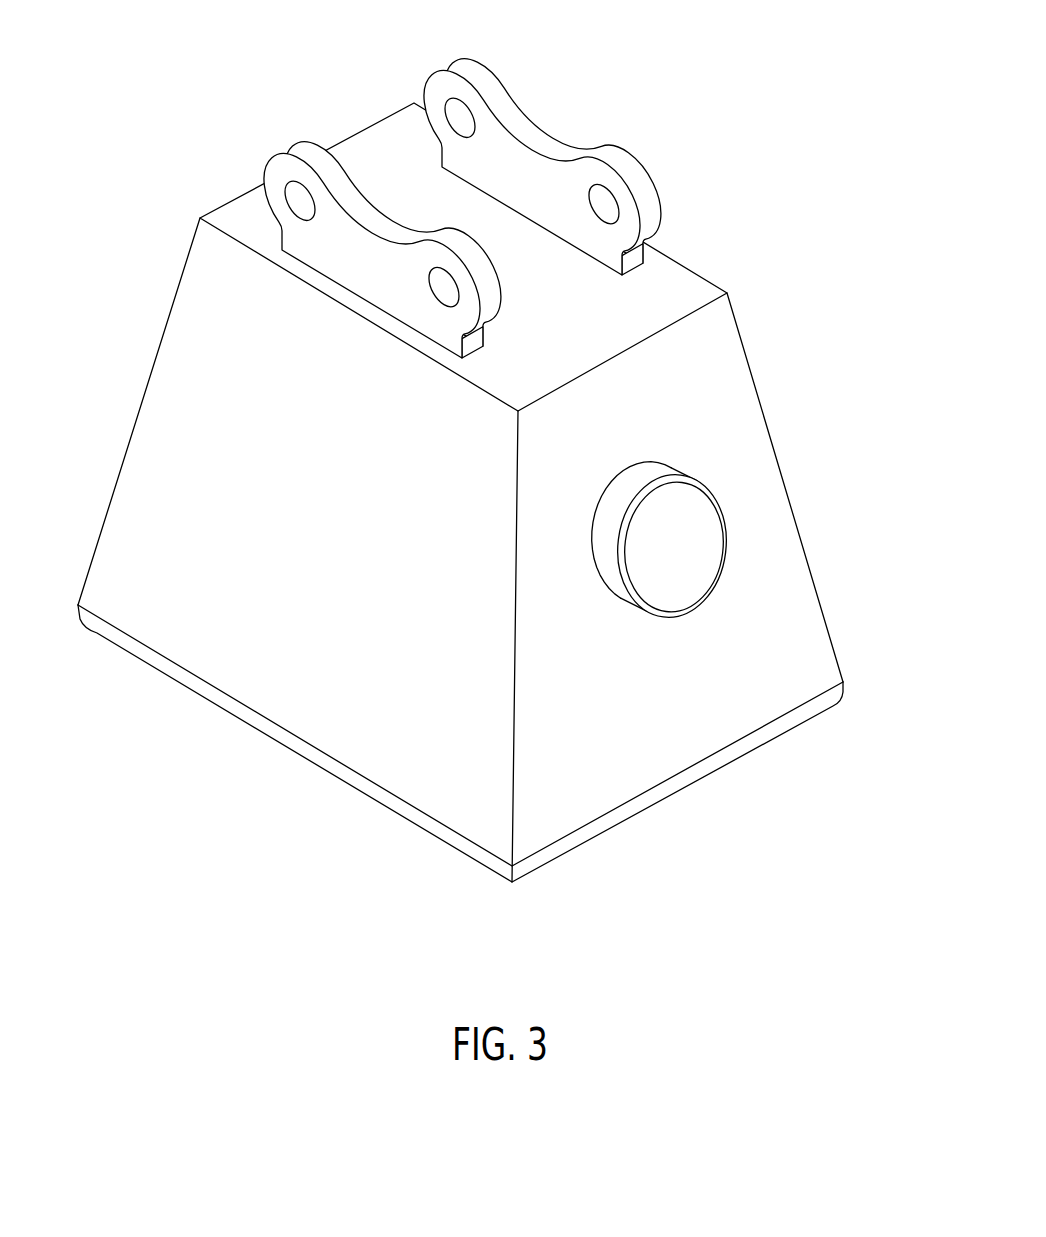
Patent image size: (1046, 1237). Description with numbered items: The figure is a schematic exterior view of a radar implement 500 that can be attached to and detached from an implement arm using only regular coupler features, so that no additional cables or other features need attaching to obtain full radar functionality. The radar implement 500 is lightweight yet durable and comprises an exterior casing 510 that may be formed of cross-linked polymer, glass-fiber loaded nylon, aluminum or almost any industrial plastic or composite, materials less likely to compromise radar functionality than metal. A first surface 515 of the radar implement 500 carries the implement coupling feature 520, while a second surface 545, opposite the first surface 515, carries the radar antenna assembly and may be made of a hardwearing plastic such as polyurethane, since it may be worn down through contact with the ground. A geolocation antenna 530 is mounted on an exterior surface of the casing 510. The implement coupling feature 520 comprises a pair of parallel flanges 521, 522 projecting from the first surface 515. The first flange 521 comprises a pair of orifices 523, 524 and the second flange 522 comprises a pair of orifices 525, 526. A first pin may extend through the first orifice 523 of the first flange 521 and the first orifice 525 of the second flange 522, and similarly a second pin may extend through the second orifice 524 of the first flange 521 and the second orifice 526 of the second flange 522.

The radar implement 500 is at (187, 56).
The exterior casing 510 is at (461, 492).
The first surface 515 is at (668, 285).
The implement coupling feature 520 is at (465, 210).
The first flange 521 is at (551, 163).
The second flange 522 is at (465, 251).
The first orifice of the first flange 523 is at (605, 205).
The second orifice of the first flange 524 is at (452, 117).
The first orifice of the second flange 525 is at (443, 290).
The second orifice of the second flange 526 is at (302, 205).
The geolocation antenna 530 is at (713, 540).
The second surface 545 is at (297, 760).